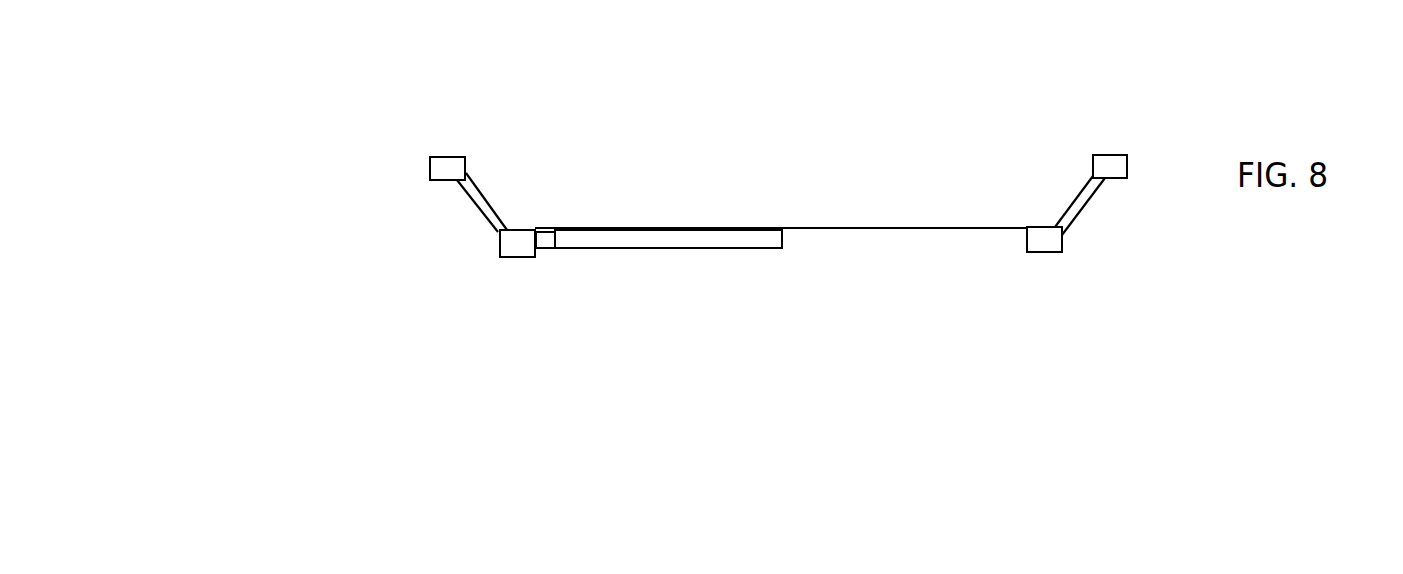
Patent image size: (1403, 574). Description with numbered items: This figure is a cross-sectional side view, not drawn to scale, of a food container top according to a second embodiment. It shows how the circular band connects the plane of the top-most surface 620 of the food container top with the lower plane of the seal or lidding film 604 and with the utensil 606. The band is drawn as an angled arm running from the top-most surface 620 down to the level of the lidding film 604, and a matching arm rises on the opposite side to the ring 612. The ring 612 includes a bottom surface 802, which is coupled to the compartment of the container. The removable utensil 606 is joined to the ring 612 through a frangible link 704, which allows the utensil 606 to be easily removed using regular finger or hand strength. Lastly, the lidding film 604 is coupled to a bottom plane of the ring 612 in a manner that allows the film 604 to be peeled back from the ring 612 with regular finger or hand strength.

The seal or lidding film 604 is at (781, 180).
The utensil 606 is at (676, 291).
The ring 612 is at (1097, 147).
The top-most surface 620 is at (419, 121).
The frangible link 704 is at (580, 288).
The bottom surface 802 is at (541, 294).